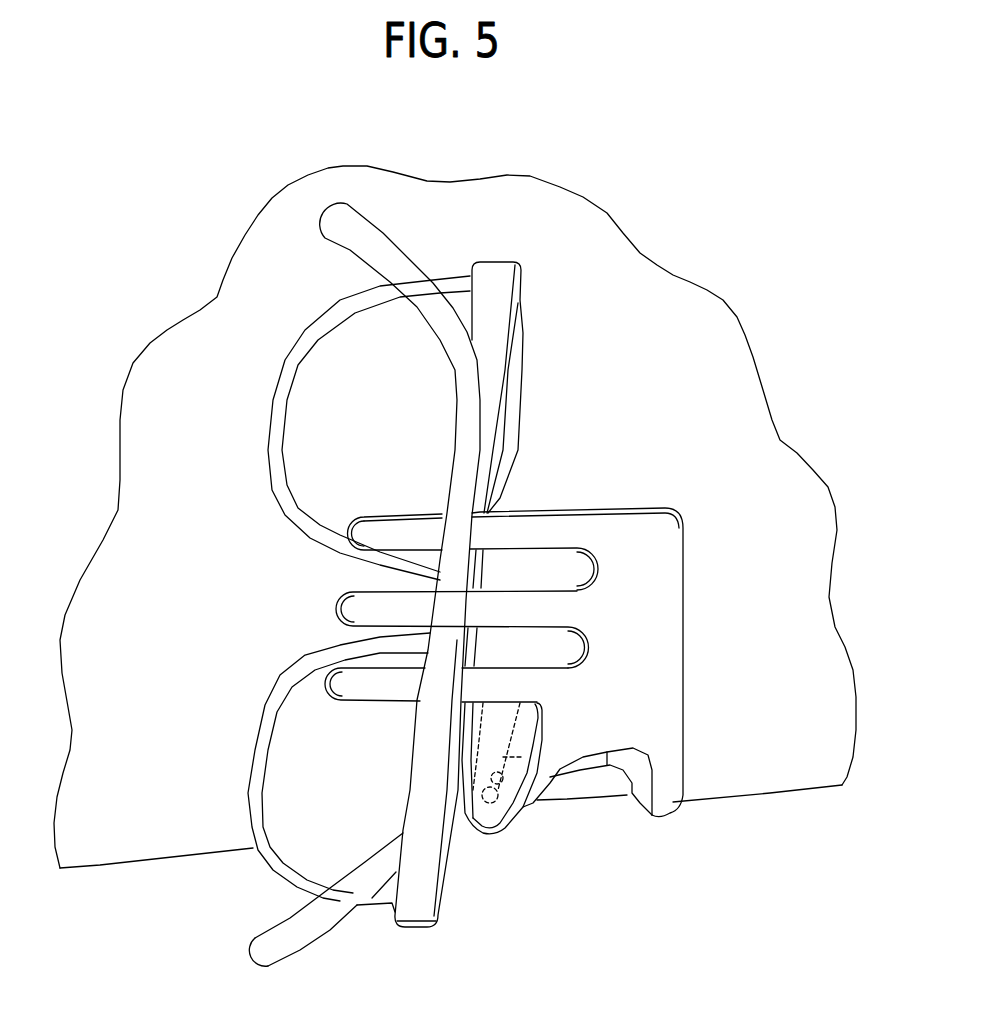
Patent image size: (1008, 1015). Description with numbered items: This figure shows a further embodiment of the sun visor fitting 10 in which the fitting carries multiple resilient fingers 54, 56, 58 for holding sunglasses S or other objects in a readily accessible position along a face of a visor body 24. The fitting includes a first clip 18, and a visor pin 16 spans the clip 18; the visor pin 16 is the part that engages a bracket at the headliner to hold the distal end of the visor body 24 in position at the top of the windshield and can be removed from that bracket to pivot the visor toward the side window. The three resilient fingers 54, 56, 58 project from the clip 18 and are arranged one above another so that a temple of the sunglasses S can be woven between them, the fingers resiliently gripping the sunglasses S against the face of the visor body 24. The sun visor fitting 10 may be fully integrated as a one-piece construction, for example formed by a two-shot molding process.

The sunglasses S is at (455, 517).
The sun visor fitting 10 is at (346, 584).
The visor pin 16 is at (566, 819).
The first clip 18 is at (623, 662).
The visor body 24 is at (657, 419).
The resilient finger 54 is at (390, 510).
The resilient finger 56 is at (391, 607).
The resilient finger 58 is at (376, 735).